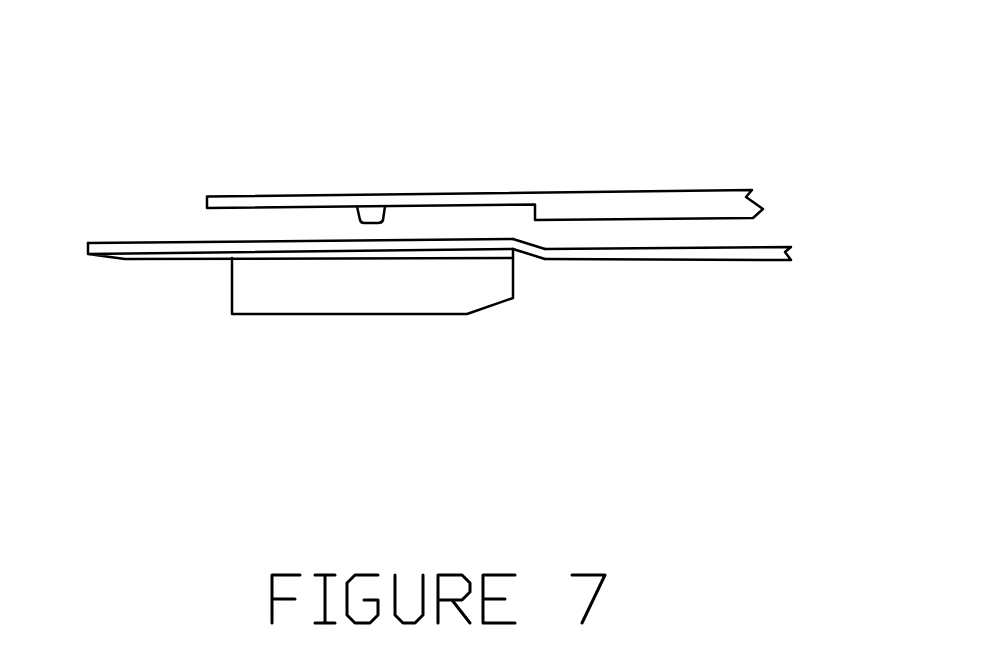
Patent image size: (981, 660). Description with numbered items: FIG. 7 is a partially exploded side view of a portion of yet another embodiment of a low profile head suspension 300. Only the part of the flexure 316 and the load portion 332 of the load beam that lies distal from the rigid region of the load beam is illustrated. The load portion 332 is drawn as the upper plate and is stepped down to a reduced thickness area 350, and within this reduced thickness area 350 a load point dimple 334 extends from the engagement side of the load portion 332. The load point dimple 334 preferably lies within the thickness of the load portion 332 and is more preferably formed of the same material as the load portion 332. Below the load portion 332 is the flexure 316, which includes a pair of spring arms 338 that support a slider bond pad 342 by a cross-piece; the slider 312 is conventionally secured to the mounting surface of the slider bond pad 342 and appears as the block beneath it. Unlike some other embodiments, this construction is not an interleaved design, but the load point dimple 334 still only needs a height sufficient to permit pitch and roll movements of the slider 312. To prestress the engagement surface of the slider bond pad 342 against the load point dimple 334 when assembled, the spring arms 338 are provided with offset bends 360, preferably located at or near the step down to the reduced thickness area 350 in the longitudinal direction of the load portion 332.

The low profile head suspension 300 is at (472, 160).
The slider 312 is at (415, 295).
The flexure 316 is at (640, 262).
The load portion 332 is at (647, 205).
The load point dimple 334 is at (372, 215).
The spring arms 338 is at (192, 243).
The slider bond pad 342 is at (182, 258).
The reduced thickness area 350 is at (287, 218).
The offset bends 360 is at (530, 245).